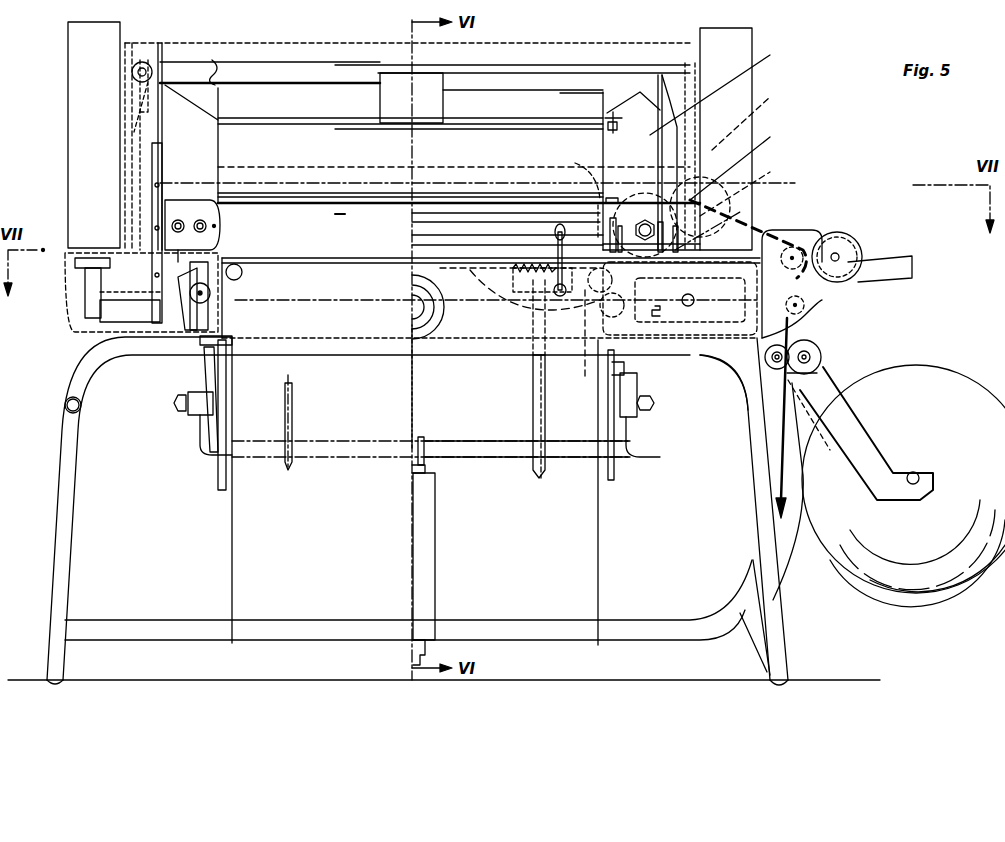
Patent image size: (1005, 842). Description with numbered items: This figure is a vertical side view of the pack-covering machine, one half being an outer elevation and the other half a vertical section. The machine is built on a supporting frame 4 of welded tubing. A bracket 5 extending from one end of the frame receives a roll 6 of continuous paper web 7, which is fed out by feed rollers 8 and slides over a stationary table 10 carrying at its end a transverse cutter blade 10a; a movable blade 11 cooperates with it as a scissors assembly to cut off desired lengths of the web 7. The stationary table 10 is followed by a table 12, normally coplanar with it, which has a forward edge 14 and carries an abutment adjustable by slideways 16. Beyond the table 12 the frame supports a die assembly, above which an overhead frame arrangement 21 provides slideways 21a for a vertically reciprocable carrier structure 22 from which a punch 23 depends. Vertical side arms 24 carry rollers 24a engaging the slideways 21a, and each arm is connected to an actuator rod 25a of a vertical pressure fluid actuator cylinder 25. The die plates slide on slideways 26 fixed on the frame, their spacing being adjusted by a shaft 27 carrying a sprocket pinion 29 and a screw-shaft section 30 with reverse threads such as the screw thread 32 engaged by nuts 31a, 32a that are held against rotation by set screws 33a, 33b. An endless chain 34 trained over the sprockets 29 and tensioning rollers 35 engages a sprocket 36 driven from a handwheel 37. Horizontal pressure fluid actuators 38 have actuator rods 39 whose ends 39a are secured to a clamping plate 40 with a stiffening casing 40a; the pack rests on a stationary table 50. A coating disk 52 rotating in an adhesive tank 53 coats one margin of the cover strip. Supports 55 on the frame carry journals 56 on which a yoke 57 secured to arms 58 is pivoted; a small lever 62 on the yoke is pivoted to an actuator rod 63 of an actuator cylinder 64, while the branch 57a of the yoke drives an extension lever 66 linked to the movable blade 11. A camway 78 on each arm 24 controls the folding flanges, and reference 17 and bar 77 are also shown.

The supporting frame 4 is at (758, 498).
The bracket 5 is at (860, 450).
The roll 6 is at (940, 380).
The paper web 7 is at (800, 440).
The feed rollers 8 is at (727, 206).
The stationary table 10 is at (634, 222).
The stationary cutter blade 10a is at (607, 198).
The movable blade 11 is at (612, 171).
The table 12 is at (345, 192).
The forward edge 14 is at (467, 229).
The slideways 16 is at (808, 350).
The strap 17 is at (775, 378).
The overhead frame arrangement 21 is at (166, 50).
The slideways 21a is at (130, 68).
The carrier structure 22 is at (165, 73).
The punch 23 is at (262, 138).
The vertical side arms 24 is at (58, 345).
The rollers 24a is at (142, 62).
The pressure fluid actuator cylinder 25 is at (92, 90).
The actuator rod 25a is at (92, 290).
The slideways 26 is at (224, 360).
The shaft 27 is at (680, 298).
The sprocket pinion 29 is at (212, 296).
The screw-shaft section 30 is at (185, 333).
The nut 31a is at (581, 343).
The screw thread 32 is at (180, 220).
The nut 32a is at (205, 345).
The set screw 33a is at (760, 213).
The set screw 33b is at (222, 258).
The endless chain 34 is at (475, 300).
The tensioning rollers 35 is at (282, 258).
The sprocket 36 is at (412, 307).
The handwheel 37 is at (438, 340).
The pressure fluid actuators 38 is at (730, 163).
The actuator rod 39 is at (172, 222).
The rod end 39a is at (744, 163).
The plate 40 is at (497, 205).
The stiffening casing 40a is at (455, 215).
The stationary table 50 is at (440, 262).
The coating disk 52 is at (840, 245).
The tank 53 is at (890, 266).
The supports 55 is at (190, 400).
The journals 56 is at (182, 412).
The yoke 57 is at (498, 458).
The branch of yoke 57a is at (640, 440).
The arms 58 is at (295, 415).
The small lever 62 is at (426, 440).
The actuator rod 63 is at (428, 468).
The actuator cylinder 64 is at (425, 556).
The extension lever 66 is at (625, 372).
The bar 77 is at (276, 185).
The camway 78 is at (152, 150).